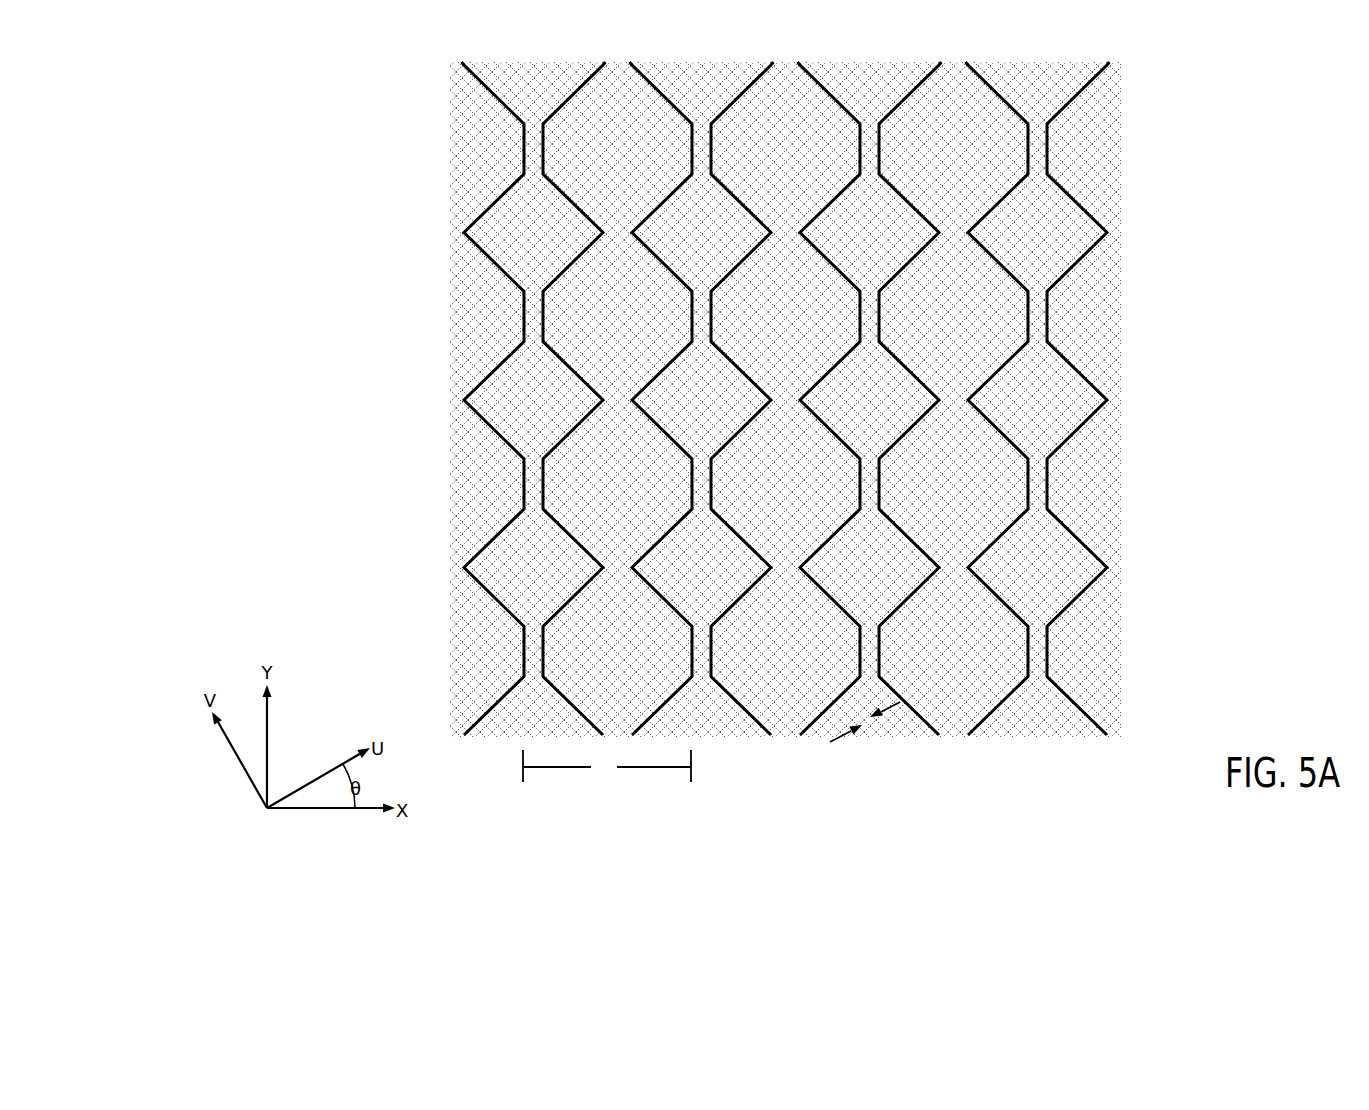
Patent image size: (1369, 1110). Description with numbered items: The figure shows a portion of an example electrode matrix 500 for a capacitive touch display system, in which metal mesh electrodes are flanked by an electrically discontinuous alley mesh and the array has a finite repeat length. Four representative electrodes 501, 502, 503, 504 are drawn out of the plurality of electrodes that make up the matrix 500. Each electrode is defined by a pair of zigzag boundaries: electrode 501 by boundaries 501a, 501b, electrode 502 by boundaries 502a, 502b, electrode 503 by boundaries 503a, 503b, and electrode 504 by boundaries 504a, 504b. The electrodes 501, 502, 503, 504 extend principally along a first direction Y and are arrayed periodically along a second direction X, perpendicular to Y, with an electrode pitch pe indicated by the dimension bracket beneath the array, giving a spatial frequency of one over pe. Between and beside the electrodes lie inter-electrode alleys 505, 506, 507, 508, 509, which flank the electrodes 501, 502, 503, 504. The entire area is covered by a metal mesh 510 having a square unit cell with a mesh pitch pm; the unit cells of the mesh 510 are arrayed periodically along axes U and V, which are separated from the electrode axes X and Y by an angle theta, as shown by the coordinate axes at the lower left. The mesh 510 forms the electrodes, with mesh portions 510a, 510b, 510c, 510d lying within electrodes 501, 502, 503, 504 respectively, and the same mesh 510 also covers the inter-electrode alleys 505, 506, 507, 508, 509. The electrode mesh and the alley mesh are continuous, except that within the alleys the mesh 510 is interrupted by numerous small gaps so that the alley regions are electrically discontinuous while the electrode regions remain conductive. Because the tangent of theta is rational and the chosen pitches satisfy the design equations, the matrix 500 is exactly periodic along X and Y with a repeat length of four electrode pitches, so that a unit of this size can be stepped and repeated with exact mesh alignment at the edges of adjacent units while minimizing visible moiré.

The electrode matrix 500 is at (710, 403).
The electrode 501 is at (537, 379).
The electrode 502 is at (707, 379).
The electrode 503 is at (875, 379).
The electrode 504 is at (1043, 379).
The boundary 501a is at (516, 182).
The boundary 501b is at (552, 182).
The boundary 502a is at (684, 182).
The boundary 502b is at (720, 182).
The boundary 503a is at (852, 182).
The boundary 503b is at (888, 182).
The boundary 504a is at (1020, 182).
The boundary 504b is at (1056, 182).
The inter-electrode alley 505 is at (462, 318).
The inter-electrode alley 506 is at (598, 318).
The inter-electrode alley 507 is at (775, 318).
The inter-electrode alley 508 is at (943, 318).
The inter-electrode alley 509 is at (1087, 318).
The metal mesh 510 is at (727, 431).
The metal mesh 510a is at (513, 408).
The metal mesh 510b is at (684, 408).
The metal mesh 510c is at (853, 408).
The metal mesh 510d is at (1021, 408).